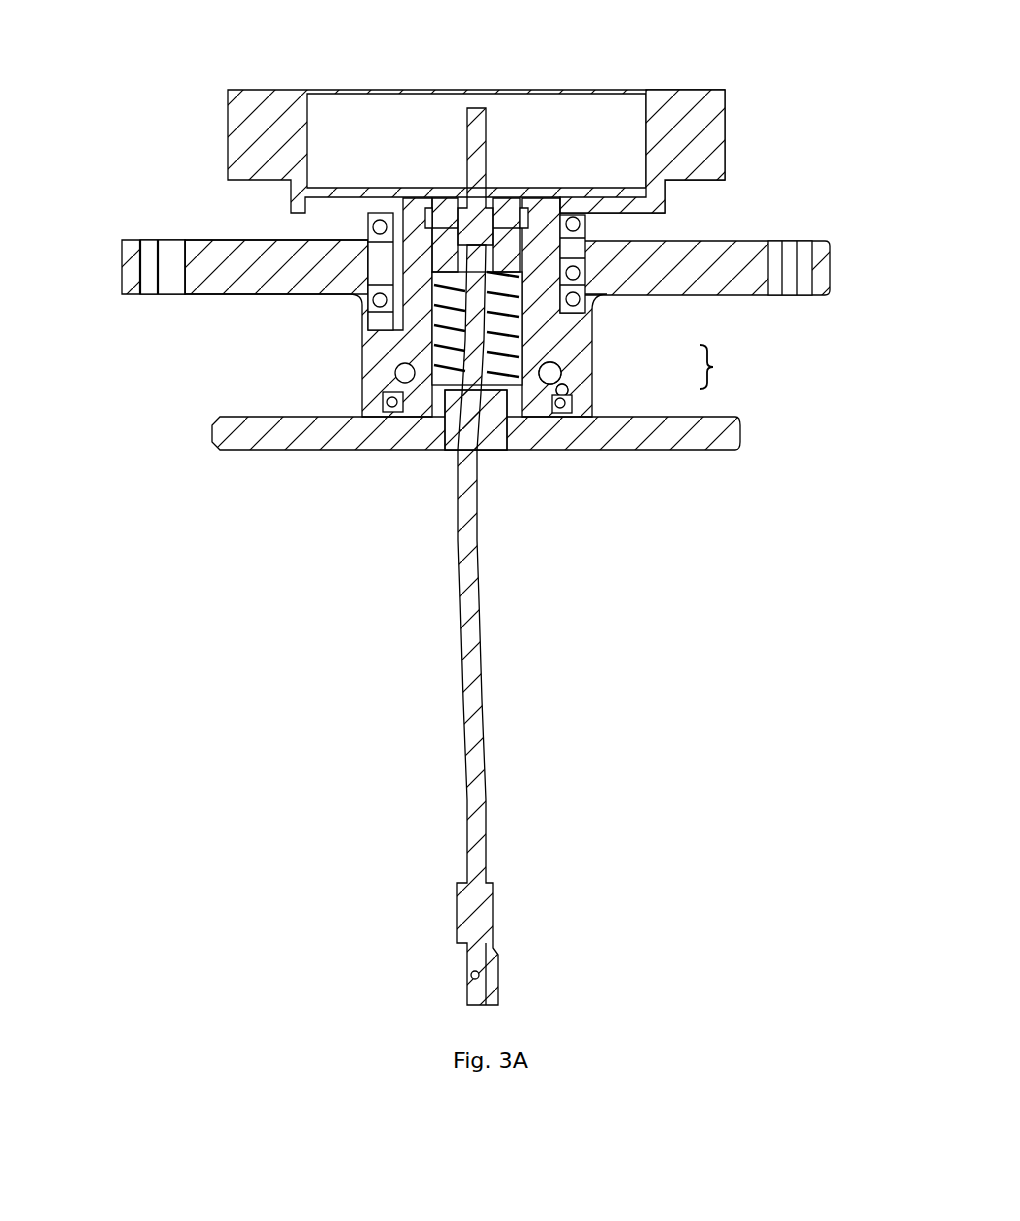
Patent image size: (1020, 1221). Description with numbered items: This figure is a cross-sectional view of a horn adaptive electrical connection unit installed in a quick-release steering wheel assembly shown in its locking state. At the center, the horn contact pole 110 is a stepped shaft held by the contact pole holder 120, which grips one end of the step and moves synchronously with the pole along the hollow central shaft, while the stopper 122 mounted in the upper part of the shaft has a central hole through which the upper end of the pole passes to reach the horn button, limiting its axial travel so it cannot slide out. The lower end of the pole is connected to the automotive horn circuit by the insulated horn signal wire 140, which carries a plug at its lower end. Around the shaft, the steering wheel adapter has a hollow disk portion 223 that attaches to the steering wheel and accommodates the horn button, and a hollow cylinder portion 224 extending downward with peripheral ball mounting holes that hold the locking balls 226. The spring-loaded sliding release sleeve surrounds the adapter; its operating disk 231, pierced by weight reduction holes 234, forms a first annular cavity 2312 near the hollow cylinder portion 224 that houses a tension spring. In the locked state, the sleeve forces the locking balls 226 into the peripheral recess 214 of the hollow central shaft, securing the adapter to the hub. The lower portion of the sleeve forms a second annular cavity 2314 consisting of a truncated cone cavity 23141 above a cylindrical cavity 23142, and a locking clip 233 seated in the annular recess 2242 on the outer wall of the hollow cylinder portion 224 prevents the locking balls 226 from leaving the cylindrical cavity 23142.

The horn contact pole 110 is at (478, 130).
The disk portion 223 is at (712, 128).
The stopper 122 is at (503, 210).
The contact pole holder 120 is at (510, 250).
The hollow cylinder portion 224 is at (555, 262).
The first annular cavity 2312 is at (368, 263).
The weight reduction holes 234 is at (140, 263).
The operating disk 231 is at (822, 268).
The locking balls 226 is at (398, 371).
The truncated cone cavity 23141 is at (556, 368).
The cylindrical cavity 23142 is at (567, 390).
The second annular cavity 2314 is at (656, 370).
The locking clip 233 is at (565, 404).
The peripheral recess 214 is at (510, 405).
The annular recess 2242 is at (396, 406).
The horn signal wire 140 is at (473, 660).